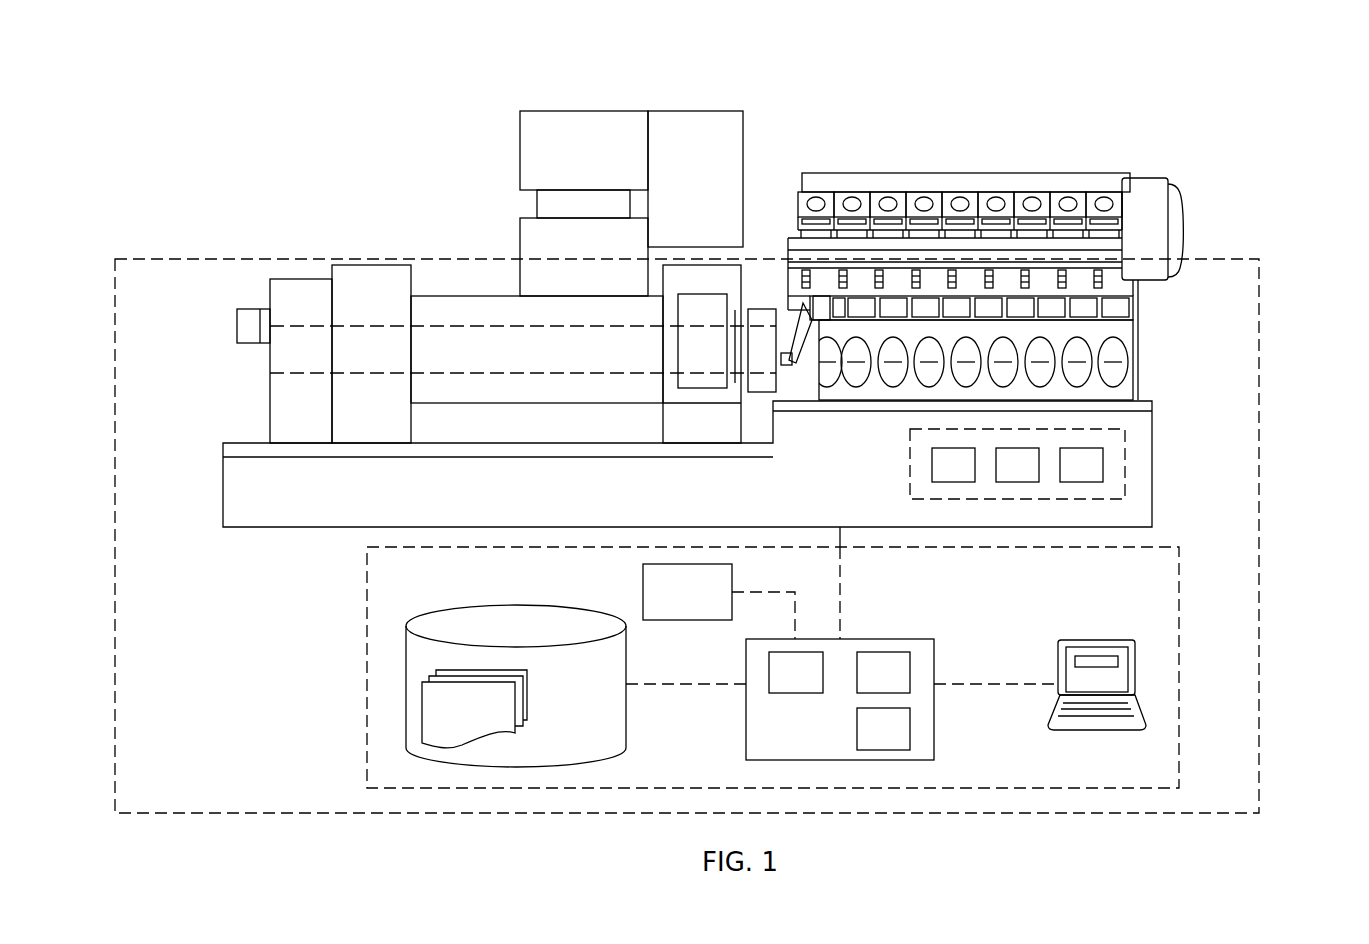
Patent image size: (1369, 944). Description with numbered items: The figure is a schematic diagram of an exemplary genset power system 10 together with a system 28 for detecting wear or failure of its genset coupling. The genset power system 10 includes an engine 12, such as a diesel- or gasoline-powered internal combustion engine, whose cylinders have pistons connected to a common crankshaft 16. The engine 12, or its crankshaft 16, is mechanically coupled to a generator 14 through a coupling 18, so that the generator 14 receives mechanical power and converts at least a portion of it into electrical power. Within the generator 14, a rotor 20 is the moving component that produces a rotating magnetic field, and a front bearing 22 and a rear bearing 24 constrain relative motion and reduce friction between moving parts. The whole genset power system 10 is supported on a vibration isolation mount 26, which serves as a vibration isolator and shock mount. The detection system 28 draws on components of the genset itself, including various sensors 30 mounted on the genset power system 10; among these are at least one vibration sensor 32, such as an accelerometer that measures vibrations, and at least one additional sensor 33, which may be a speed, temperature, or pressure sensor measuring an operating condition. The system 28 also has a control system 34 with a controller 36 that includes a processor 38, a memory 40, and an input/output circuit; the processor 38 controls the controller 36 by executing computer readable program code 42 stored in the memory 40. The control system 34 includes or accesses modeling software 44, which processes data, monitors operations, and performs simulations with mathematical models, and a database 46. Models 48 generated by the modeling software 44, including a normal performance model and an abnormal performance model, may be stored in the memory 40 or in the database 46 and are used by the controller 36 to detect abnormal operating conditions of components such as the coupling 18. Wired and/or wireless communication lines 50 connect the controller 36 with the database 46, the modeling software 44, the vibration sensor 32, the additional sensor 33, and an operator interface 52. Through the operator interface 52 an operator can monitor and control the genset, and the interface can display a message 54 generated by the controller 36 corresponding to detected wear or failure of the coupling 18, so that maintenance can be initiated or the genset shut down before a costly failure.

The genset power system 10 is at (1072, 133).
The engine 12 is at (1143, 178).
The generator 14 is at (518, 233).
The crankshaft 16 is at (1155, 318).
The coupling 18 is at (754, 285).
The rotor 20 is at (447, 327).
The front bearing 22 is at (732, 400).
The rear bearing 24 is at (348, 273).
The vibration isolation mount 26 is at (270, 510).
The system for detecting wear or failure of the coupling 28 is at (1262, 348).
The sensors 30 is at (1125, 452).
The vibration sensor 32 is at (1103, 482).
The additional sensor 33 is at (1020, 468).
The control system 34 is at (1179, 633).
The controller 36 is at (840, 759).
The processor 38 is at (781, 687).
The memory 40 is at (868, 687).
The computer readable program code 42 is at (868, 744).
The modeling software 44 is at (671, 605).
The database 46 is at (516, 742).
The models 48 is at (453, 727).
The communication lines 50 is at (747, 590).
The operator interface 52 is at (1190, 651).
The message 54 is at (1118, 662).